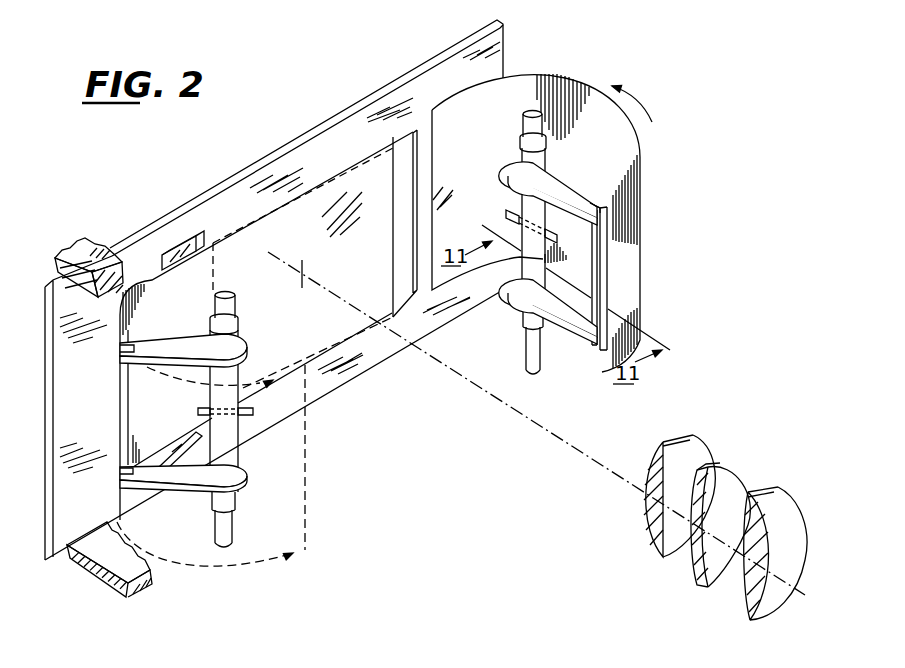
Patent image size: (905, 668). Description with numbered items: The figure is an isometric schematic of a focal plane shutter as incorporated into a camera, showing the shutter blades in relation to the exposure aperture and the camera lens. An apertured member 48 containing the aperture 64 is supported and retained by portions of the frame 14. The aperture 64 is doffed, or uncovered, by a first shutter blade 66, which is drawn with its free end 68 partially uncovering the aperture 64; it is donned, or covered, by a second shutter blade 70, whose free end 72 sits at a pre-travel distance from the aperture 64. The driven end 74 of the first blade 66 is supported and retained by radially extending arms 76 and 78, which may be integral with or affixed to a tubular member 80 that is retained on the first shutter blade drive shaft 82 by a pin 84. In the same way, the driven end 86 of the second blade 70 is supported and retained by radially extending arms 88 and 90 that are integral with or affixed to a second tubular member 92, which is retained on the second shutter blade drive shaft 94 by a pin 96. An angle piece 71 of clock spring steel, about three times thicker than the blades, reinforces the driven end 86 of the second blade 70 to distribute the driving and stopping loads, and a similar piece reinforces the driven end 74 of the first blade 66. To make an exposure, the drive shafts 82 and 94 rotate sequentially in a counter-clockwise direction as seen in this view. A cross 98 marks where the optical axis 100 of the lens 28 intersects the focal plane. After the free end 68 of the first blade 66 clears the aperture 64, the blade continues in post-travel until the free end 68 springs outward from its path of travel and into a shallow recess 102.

The frame 14 is at (87, 243).
The lens 28 is at (752, 626).
The apertured member 48 is at (403, 77).
The aperture 64 is at (417, 167).
The first shutter blade 66 is at (343, 168).
The free end 68 is at (392, 227).
The second shutter blade 70 is at (557, 78).
The angle piece 71 is at (605, 245).
The free end 72 is at (433, 233).
The driven end 74 is at (120, 398).
The radially extending arm 76 is at (184, 346).
The radially extending arm 78 is at (181, 482).
The tubular member 80 is at (232, 338).
The first shutter blade drive shaft 82 is at (230, 307).
The pin 84 is at (253, 406).
The driven end 86 is at (598, 278).
The radially extending arm 88 is at (560, 173).
The radially extending arm 90 is at (572, 323).
The second tubular member 92 is at (522, 148).
The second shutter blade drive shaft 94 is at (526, 128).
The pin 96 is at (510, 215).
The cross 98 is at (308, 275).
The optical axis 100 is at (542, 427).
The shallow recess 102 is at (178, 246).